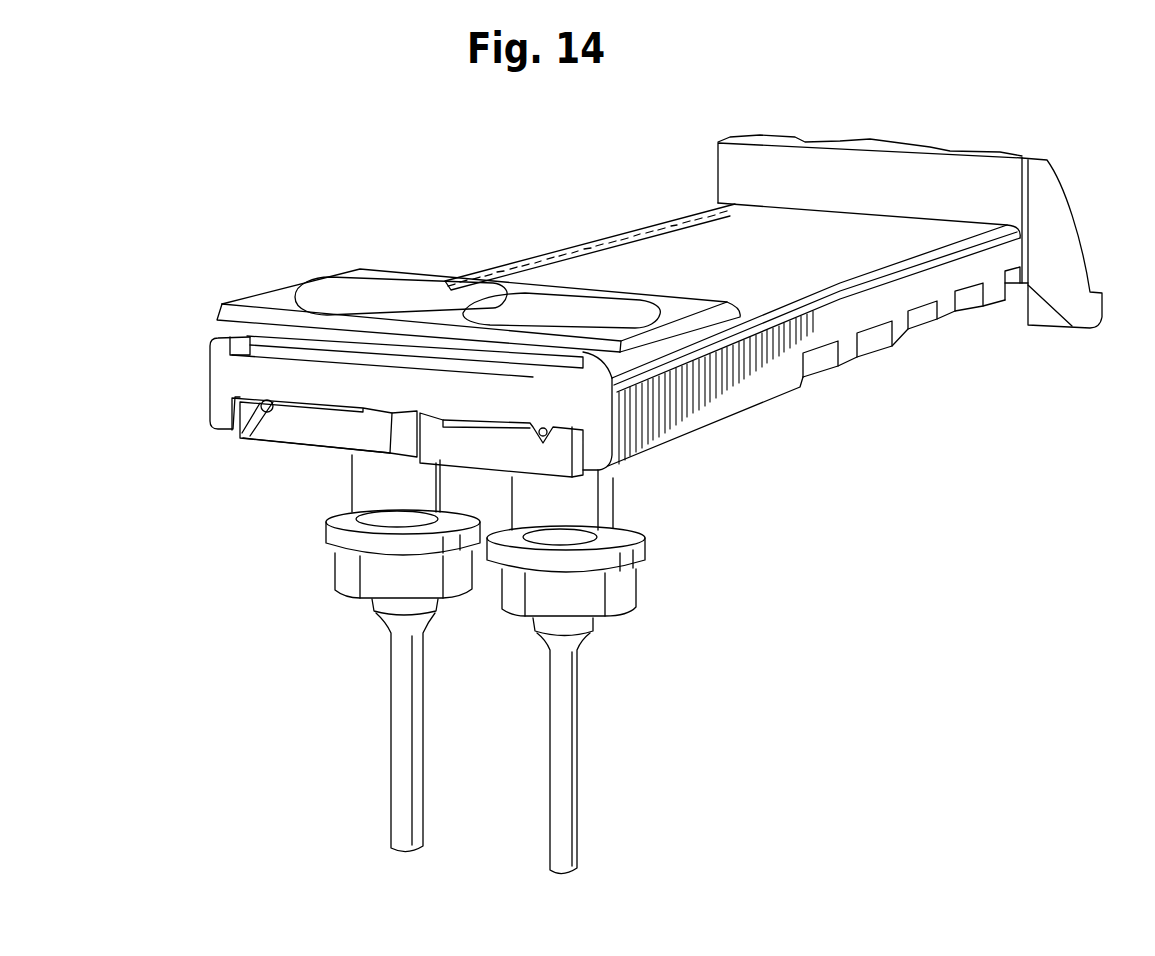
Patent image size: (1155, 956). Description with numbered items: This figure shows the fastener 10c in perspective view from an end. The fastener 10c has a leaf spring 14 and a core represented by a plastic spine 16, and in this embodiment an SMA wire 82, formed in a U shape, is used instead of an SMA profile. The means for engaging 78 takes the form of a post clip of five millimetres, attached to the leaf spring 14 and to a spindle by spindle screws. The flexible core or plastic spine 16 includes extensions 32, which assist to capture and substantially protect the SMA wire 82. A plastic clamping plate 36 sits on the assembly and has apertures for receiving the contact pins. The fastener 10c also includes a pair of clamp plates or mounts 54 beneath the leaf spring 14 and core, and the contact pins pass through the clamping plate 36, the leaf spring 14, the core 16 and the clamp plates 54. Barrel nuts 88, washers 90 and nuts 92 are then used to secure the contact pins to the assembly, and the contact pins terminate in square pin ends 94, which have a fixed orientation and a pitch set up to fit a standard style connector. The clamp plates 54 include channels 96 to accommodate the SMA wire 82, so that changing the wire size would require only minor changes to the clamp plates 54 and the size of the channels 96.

The fastener 10c is at (931, 503).
The means for engaging 78 is at (716, 152).
The plastic spine 16 is at (527, 256).
The plastic clamping plate 36 is at (278, 290).
The leaf spring 14 is at (665, 250).
The SMA wire 82 is at (236, 434).
The channels 96 is at (262, 428).
The clamp plates 54 is at (302, 446).
The barrel nuts 88 is at (612, 505).
The washers 90 is at (643, 553).
The nuts 92 is at (623, 592).
The square pin ends 94 is at (393, 848).
The extensions 32 is at (850, 364).